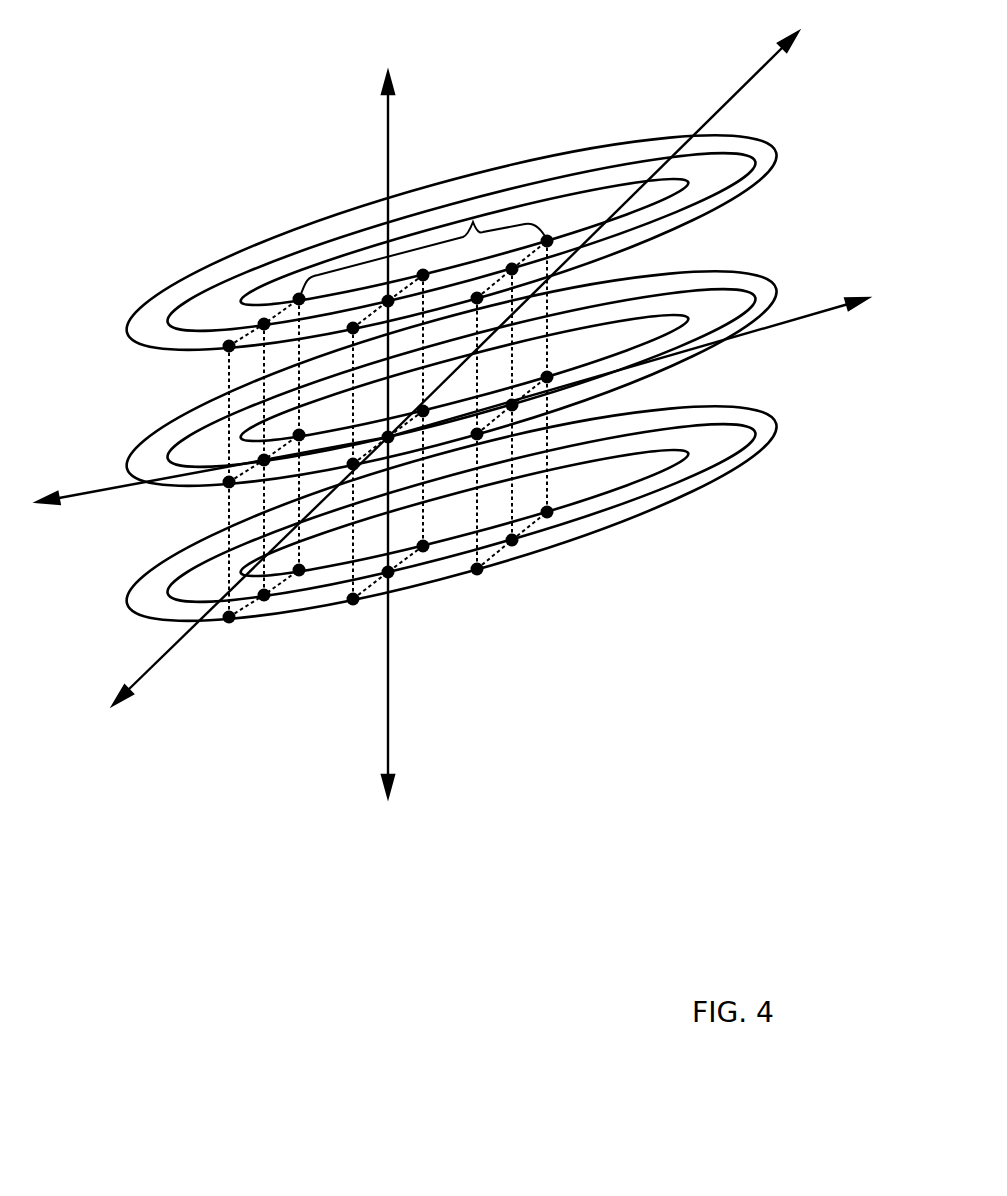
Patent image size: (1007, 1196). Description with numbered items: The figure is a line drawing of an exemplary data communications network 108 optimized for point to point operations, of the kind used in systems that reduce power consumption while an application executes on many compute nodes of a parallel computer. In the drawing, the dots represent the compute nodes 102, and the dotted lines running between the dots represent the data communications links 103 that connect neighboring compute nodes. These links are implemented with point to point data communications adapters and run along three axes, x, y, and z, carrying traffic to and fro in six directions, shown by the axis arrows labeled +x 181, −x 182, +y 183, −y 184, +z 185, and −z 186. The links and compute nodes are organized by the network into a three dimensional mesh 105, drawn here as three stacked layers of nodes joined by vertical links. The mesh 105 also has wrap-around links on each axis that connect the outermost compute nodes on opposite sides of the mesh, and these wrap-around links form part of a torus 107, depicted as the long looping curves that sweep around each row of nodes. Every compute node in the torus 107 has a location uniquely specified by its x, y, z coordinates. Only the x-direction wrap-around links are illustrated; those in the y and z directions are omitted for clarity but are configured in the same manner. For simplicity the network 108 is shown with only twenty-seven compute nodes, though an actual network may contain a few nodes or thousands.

The compute nodes 102 is at (477, 572).
The data communications links 103 is at (228, 376).
The three dimensional mesh 105 is at (486, 217).
The torus 107 is at (203, 240).
The data communications network 108 is at (433, 575).
The +x direction 181 is at (874, 334).
The −x direction 182 is at (2, 544).
The +y direction 183 is at (811, 61).
The −y direction 184 is at (101, 770).
The +z direction 185 is at (374, 64).
The −z direction 186 is at (375, 866).